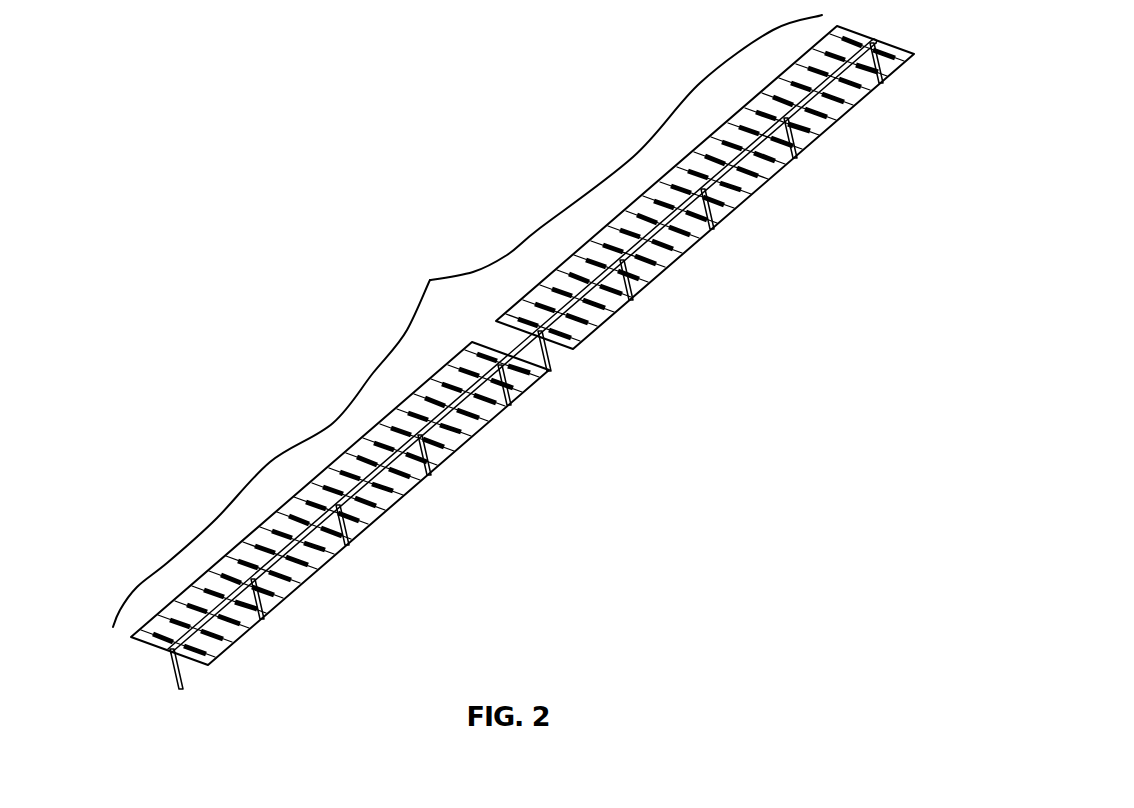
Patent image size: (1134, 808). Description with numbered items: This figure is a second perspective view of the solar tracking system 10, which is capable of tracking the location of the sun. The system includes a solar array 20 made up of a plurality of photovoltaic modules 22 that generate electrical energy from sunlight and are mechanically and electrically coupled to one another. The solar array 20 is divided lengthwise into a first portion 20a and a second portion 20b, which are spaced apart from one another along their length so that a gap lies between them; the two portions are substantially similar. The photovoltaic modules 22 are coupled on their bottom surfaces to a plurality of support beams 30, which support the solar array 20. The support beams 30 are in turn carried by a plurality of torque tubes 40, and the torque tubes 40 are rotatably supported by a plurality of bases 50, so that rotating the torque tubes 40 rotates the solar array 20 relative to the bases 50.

The solar tracking system 10 is at (265, 153).
The solar array 20 is at (430, 280).
The first portion 20a is at (705, 187).
The second portion 20b is at (420, 530).
The photovoltaic module 22 is at (753, 183).
The support beam 30 is at (827, 117).
The torque tube 40 is at (843, 100).
The base 50 is at (887, 70).